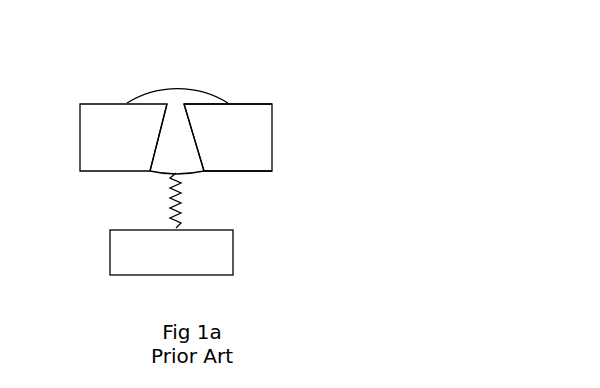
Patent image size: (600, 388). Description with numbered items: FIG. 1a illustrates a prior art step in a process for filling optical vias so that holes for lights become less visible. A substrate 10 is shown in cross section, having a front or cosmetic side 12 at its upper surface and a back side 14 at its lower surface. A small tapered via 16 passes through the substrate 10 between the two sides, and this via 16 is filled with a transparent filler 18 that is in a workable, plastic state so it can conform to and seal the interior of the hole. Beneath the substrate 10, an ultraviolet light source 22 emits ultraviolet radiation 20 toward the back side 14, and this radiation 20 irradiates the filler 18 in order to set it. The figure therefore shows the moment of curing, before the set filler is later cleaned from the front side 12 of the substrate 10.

The substrate 10 is at (253, 100).
The front or cosmetic side 12 is at (265, 102).
The back side 14 is at (259, 167).
The via 16 is at (195, 136).
The transparent filler 18 is at (188, 174).
The ultraviolet (UV) radiation 20 is at (168, 203).
The ultraviolet light source 22 is at (108, 253).